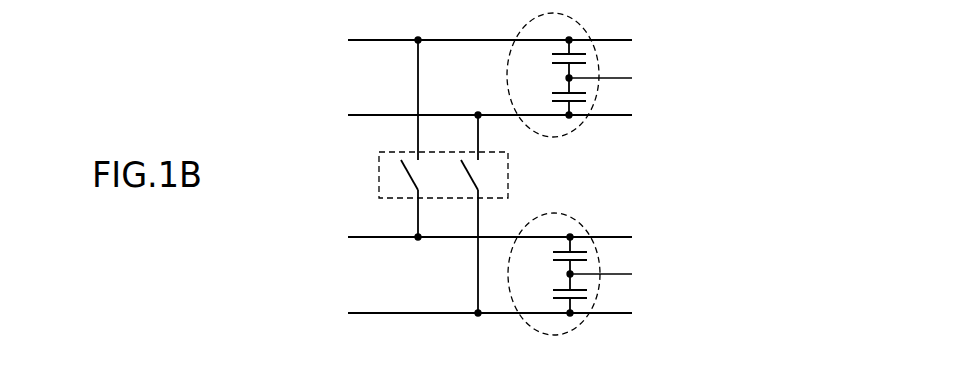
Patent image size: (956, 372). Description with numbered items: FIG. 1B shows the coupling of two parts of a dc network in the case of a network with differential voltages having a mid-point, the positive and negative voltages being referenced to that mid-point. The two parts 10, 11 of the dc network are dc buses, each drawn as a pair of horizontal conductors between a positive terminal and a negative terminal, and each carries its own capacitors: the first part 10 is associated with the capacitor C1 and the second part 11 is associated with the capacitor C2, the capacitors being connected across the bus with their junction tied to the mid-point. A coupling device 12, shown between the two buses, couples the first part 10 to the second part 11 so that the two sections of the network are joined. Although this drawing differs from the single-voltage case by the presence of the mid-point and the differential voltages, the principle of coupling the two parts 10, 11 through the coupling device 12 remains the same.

The part of dc network 10 is at (325, 32).
The part of dc network 11 is at (325, 230).
The coupling device 12 is at (508, 172).
The capacitor C1 is at (578, 72).
The capacitor C2 is at (579, 269).